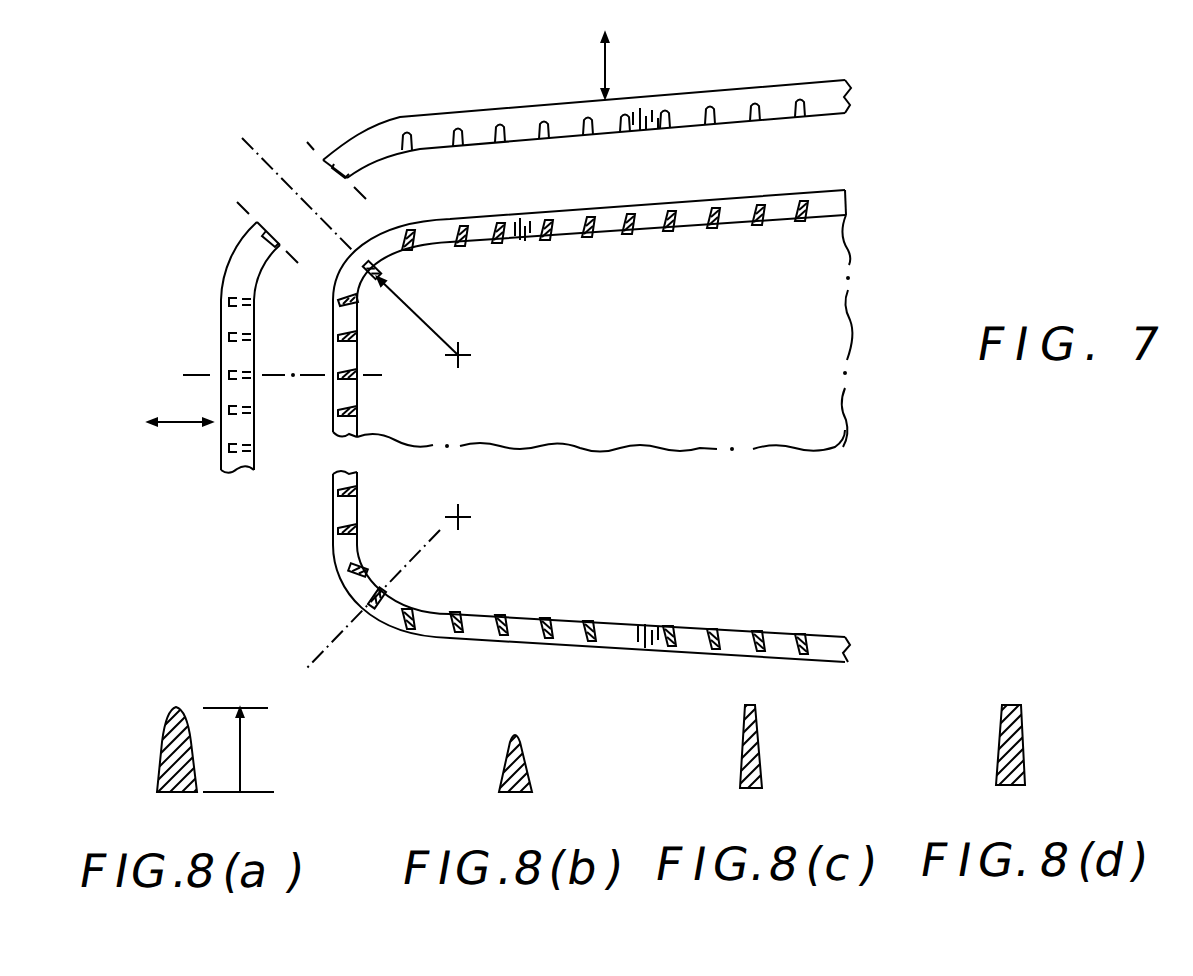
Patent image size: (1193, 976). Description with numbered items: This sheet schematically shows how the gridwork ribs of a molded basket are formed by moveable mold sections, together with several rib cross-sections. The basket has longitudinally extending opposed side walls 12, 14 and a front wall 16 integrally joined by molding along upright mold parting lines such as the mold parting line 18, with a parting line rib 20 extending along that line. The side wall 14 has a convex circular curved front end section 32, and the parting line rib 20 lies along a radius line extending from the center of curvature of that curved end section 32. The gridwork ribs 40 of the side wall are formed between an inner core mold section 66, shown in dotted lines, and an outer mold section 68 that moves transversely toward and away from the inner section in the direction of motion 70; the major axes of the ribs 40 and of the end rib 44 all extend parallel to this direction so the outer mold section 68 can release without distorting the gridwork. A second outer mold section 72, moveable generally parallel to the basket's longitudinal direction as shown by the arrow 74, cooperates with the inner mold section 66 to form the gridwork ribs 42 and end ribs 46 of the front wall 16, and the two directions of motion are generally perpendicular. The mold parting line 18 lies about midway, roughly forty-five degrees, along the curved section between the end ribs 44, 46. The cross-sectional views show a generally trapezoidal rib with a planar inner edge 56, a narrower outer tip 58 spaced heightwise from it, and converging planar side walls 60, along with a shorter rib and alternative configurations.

In FIG. 7, the side wall 12 is at (667, 672).
In FIG. 7, the side wall 14 is at (822, 184).
In FIG. 7, the front wall 16 is at (317, 436).
In FIG. 7, the mold parting line 18 is at (262, 160).
In FIG. 7, the parting line rib 20 is at (362, 270).
In FIG. 7, the curved front end section 32 is at (370, 233).
In FIG. 7, the gridwork rib 40 is at (766, 204).
In FIG. 8a, the gridwork rib 40 is at (137, 705).
In FIG. 7, the gridwork rib 42 is at (335, 318).
In FIG. 7, the end rib 44 is at (468, 228).
In FIG. 7, the end rib 46 is at (335, 356).
In FIG. 8a, the inner edge 56 is at (160, 794).
In FIG. 8a, the outer tip 58 is at (177, 706).
In FIG. 8a, the side walls 60 is at (190, 736).
In FIG. 7, the inner core mold section 66 is at (820, 318).
In FIG. 7, the outer mold section 68 is at (855, 98).
In FIG. 7, the direction of motion 70 is at (607, 67).
In FIG. 7, the outer mold section 72 is at (220, 314).
In FIG. 7, the direction of motion 74 is at (181, 428).